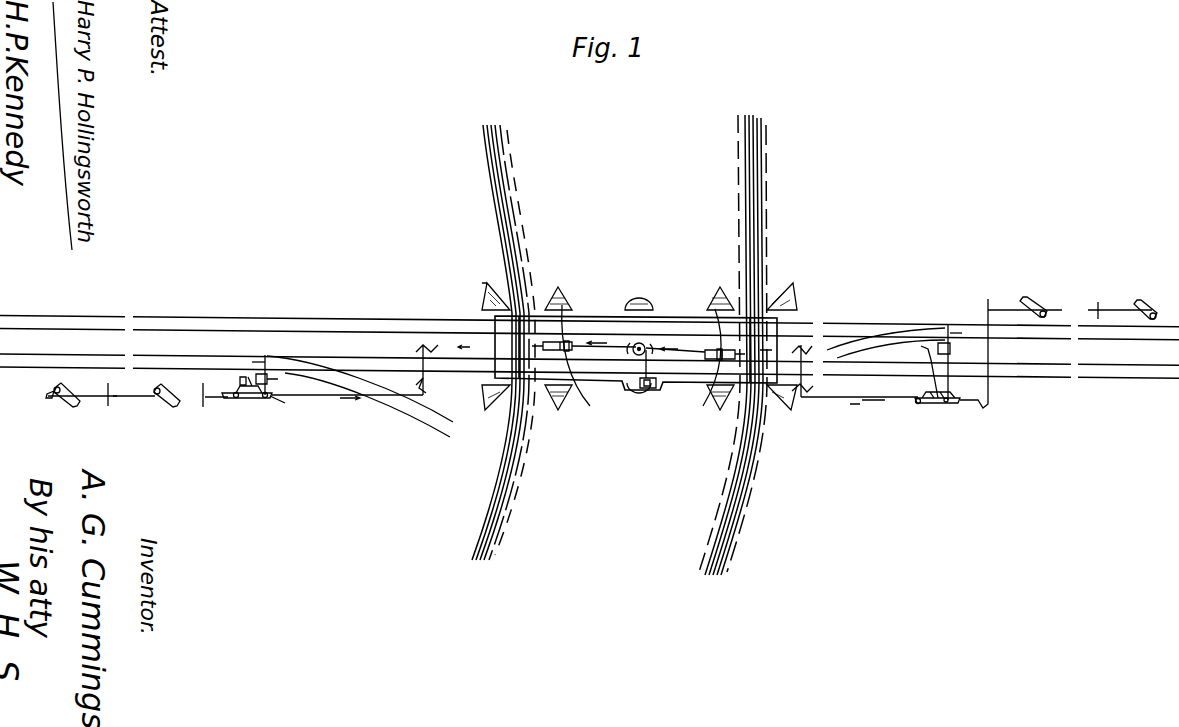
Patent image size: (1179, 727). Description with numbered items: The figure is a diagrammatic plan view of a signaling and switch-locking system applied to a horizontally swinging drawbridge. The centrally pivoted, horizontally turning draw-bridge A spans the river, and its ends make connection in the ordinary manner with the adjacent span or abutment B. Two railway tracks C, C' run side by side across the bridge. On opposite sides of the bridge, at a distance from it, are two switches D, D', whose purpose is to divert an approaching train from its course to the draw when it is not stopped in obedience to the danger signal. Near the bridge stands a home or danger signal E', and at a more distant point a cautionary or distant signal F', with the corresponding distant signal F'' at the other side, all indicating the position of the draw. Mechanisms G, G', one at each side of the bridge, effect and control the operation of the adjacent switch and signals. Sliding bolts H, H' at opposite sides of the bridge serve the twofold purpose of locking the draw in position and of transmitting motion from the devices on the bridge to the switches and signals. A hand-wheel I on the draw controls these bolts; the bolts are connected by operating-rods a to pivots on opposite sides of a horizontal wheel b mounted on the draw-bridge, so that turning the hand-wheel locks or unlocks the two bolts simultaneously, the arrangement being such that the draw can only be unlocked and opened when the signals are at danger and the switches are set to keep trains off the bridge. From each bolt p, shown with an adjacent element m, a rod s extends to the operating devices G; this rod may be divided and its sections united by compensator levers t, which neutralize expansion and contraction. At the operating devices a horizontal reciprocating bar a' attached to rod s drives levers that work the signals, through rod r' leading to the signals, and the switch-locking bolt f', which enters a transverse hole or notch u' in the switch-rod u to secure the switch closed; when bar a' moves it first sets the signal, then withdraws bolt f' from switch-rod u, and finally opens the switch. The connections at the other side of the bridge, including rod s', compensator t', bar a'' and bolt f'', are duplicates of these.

The draw-bridge A is at (606, 315).
The span or abutment B is at (553, 374).
The track C is at (589, 365).
The track C' is at (589, 324).
The switch D is at (278, 367).
The switch D' is at (947, 353).
The home signal E' is at (606, 355).
The distant signal F' is at (77, 405).
The distance signal F'' is at (1128, 294).
The switch and signal operating mechanism G is at (247, 394).
The switch and signal operating mechanism G' is at (945, 384).
The sliding bolt H is at (576, 363).
The sliding bolt H' is at (705, 366).
The hand-wheel I is at (652, 417).
The operating-rod a is at (638, 348).
The reciprocating bar a' is at (346, 404).
The connecting rod a'' is at (859, 393).
The horizontal wheel b is at (641, 343).
The lock block m is at (570, 343).
The bolt p is at (739, 365).
The signal rod r' is at (548, 358).
The operating-rod s is at (498, 388).
The signal wire s' is at (603, 352).
The compensator lever t is at (625, 387).
The compensating lever t' is at (426, 386).
The switch-rod u is at (252, 361).
The notch u' is at (960, 332).
The switch-locking bolt f' is at (265, 379).
The switch fastening bolt f'' is at (977, 351).